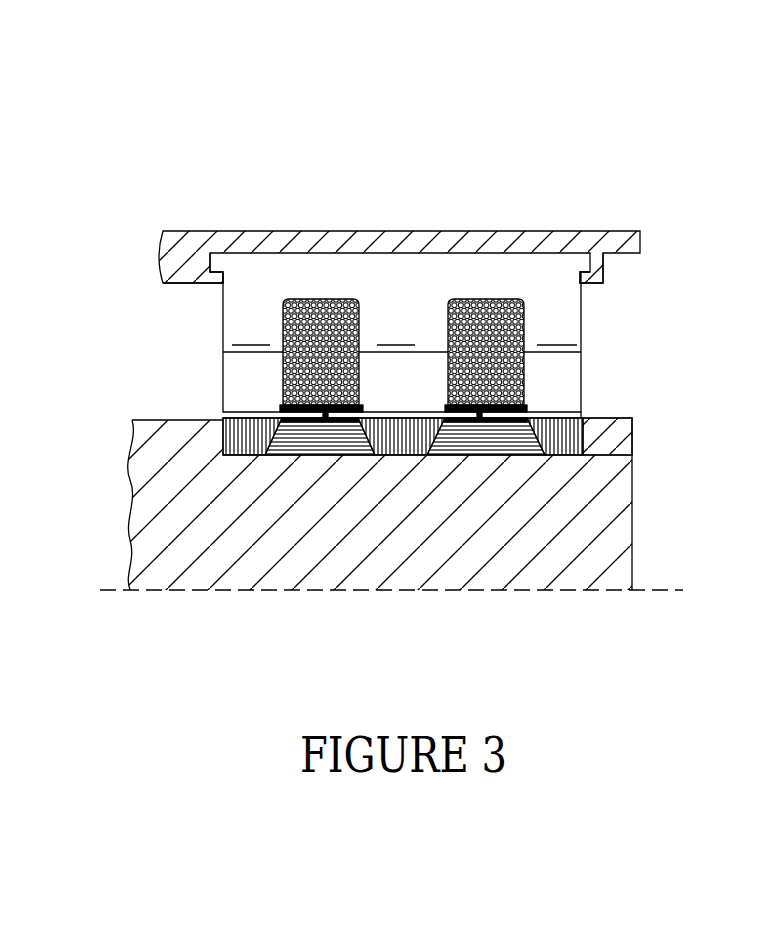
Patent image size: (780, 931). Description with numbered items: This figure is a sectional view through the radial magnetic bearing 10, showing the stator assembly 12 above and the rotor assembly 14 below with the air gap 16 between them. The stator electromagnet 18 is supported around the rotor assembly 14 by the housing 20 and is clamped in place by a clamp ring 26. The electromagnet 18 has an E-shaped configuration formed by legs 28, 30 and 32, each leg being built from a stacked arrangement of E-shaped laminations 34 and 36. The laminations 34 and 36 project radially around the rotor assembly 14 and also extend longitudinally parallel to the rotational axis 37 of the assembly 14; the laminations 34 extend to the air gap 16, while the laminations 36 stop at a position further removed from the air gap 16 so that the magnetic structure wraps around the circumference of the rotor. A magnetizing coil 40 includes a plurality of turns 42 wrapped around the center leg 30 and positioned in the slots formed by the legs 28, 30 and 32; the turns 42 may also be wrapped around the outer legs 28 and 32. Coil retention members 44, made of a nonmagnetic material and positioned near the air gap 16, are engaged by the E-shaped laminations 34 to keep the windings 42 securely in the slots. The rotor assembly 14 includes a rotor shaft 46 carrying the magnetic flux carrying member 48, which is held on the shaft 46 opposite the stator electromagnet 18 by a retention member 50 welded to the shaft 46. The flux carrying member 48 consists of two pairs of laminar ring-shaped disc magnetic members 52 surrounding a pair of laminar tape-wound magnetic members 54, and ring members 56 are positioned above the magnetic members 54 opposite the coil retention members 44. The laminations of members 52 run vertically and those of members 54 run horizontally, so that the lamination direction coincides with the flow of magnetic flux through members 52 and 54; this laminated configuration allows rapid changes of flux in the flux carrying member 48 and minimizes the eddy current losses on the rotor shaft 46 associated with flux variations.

The radial magnetic bearing 10 is at (100, 202).
The stator assembly 12 is at (594, 232).
The rotor assembly 14 is at (161, 544).
The air gap 16 is at (225, 417).
The stator electromagnet 18 is at (220, 335).
The housing 20 is at (181, 249).
The clamp ring 26 is at (603, 262).
The leg 28 is at (253, 323).
The center leg 30 is at (398, 323).
The leg 32 is at (558, 323).
The E-shaped lamination 34 is at (536, 361).
The lamination 36 is at (383, 274).
The rotational axis 37 is at (677, 587).
The magnetizing coil 40 is at (288, 298).
The turns 42 is at (478, 320).
The coil retention member 44 is at (327, 420).
The rotor shaft 46 is at (125, 580).
The magnetic flux carrying member 48 is at (590, 418).
The retention member 50 is at (635, 422).
The laminar ring-shaped disc magnetic member 52 is at (235, 443).
The laminar tape-wound magnetic member 54 is at (301, 447).
The ring member 56 is at (285, 418).